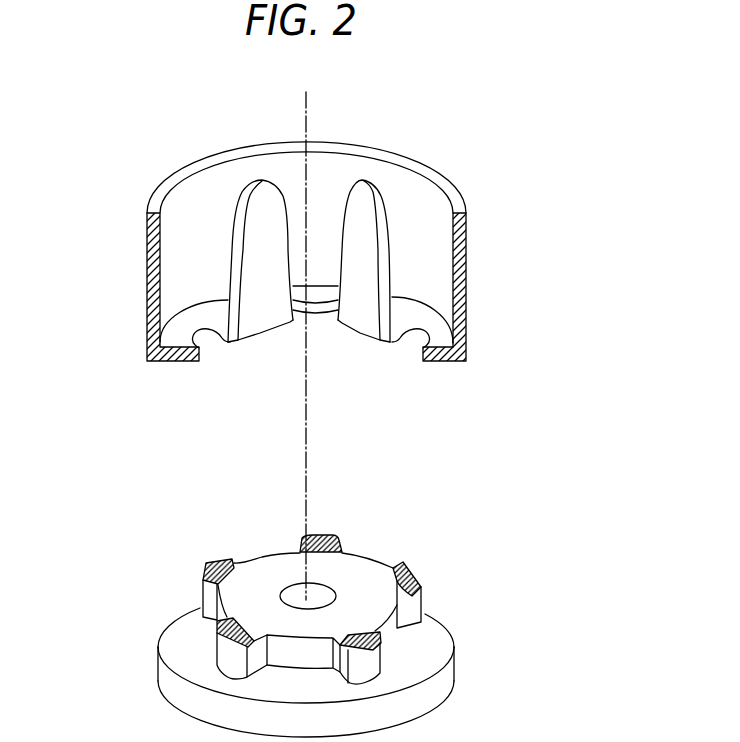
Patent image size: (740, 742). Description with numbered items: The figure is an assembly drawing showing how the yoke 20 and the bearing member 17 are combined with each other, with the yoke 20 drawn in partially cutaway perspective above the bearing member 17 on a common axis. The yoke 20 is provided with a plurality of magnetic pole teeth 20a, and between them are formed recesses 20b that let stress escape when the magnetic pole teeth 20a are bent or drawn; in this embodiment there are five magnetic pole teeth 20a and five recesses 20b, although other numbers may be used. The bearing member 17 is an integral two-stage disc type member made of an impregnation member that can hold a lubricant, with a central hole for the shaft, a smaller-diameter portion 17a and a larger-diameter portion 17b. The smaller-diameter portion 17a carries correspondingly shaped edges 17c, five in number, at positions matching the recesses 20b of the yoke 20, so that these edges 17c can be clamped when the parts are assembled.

The yoke 20 is at (467, 300).
The magnetic pole teeth 20a is at (268, 188).
The recesses 20b is at (220, 348).
The bearing member 17 is at (297, 613).
The smaller-diameter portion 17a is at (195, 578).
The larger-diameter portion 17b is at (148, 653).
The edges 17c is at (412, 568).